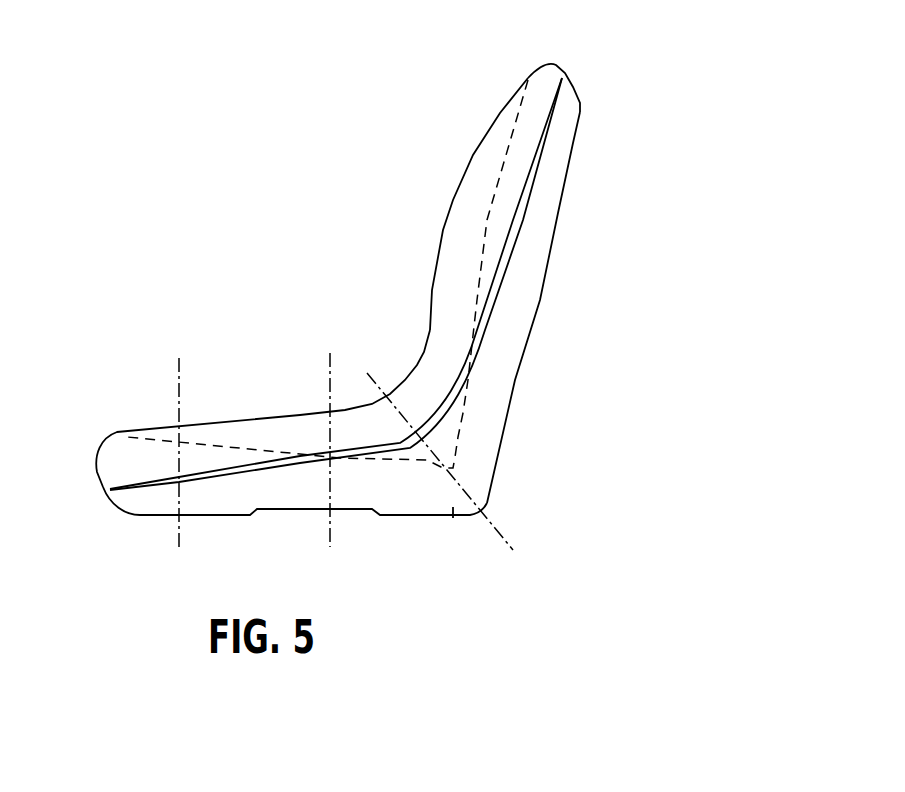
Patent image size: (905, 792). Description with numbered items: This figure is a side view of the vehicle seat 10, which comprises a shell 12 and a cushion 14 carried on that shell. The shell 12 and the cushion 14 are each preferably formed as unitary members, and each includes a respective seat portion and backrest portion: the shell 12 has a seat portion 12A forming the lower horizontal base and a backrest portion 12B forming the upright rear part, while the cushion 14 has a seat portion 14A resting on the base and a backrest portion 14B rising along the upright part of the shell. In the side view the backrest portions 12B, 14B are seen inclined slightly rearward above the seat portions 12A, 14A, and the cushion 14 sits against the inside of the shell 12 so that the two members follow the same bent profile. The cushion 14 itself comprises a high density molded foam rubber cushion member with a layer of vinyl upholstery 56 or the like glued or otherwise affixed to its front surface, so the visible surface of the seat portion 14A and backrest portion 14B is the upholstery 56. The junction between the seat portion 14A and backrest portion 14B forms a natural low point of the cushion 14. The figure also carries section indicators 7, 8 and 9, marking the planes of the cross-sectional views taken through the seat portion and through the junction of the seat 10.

The vehicle seat 10 is at (617, 142).
The shell 12 is at (560, 208).
The seat portion of shell 12A is at (435, 515).
The backrest portion of shell 12B is at (539, 300).
The cushion 14 is at (528, 78).
The seat portion of cushion 14A is at (117, 432).
The backrest portion of cushion 14B is at (473, 155).
The layer of vinyl upholstery 56 is at (455, 229).
The section line 7- 7 is at (160, 375).
The section line 8- 8 is at (315, 362).
The section line 9- 9 is at (357, 393).